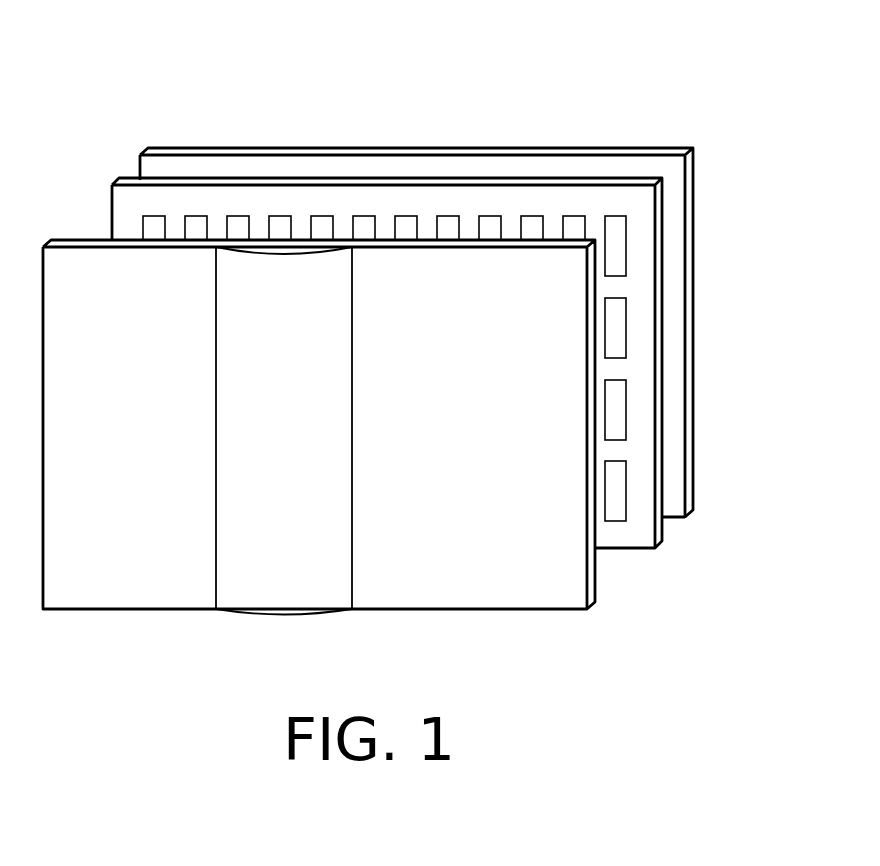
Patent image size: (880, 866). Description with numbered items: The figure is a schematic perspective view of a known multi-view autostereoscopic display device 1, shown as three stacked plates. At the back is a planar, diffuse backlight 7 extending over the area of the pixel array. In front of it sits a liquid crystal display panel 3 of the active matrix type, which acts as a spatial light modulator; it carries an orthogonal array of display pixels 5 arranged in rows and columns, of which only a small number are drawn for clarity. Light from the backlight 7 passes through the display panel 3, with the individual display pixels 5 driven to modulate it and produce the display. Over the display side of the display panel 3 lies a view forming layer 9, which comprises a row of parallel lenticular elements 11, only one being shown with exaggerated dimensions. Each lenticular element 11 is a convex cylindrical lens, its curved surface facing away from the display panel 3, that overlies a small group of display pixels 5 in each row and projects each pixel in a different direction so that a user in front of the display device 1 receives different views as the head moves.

The multi-view autostereoscopic display device 1 is at (66, 91).
The liquid crystal display panel 3 is at (427, 368).
The display pixels 5 is at (618, 267).
The backlight 7 is at (688, 493).
The view forming layer 9 is at (342, 455).
The lenticular elements 11 is at (315, 602).